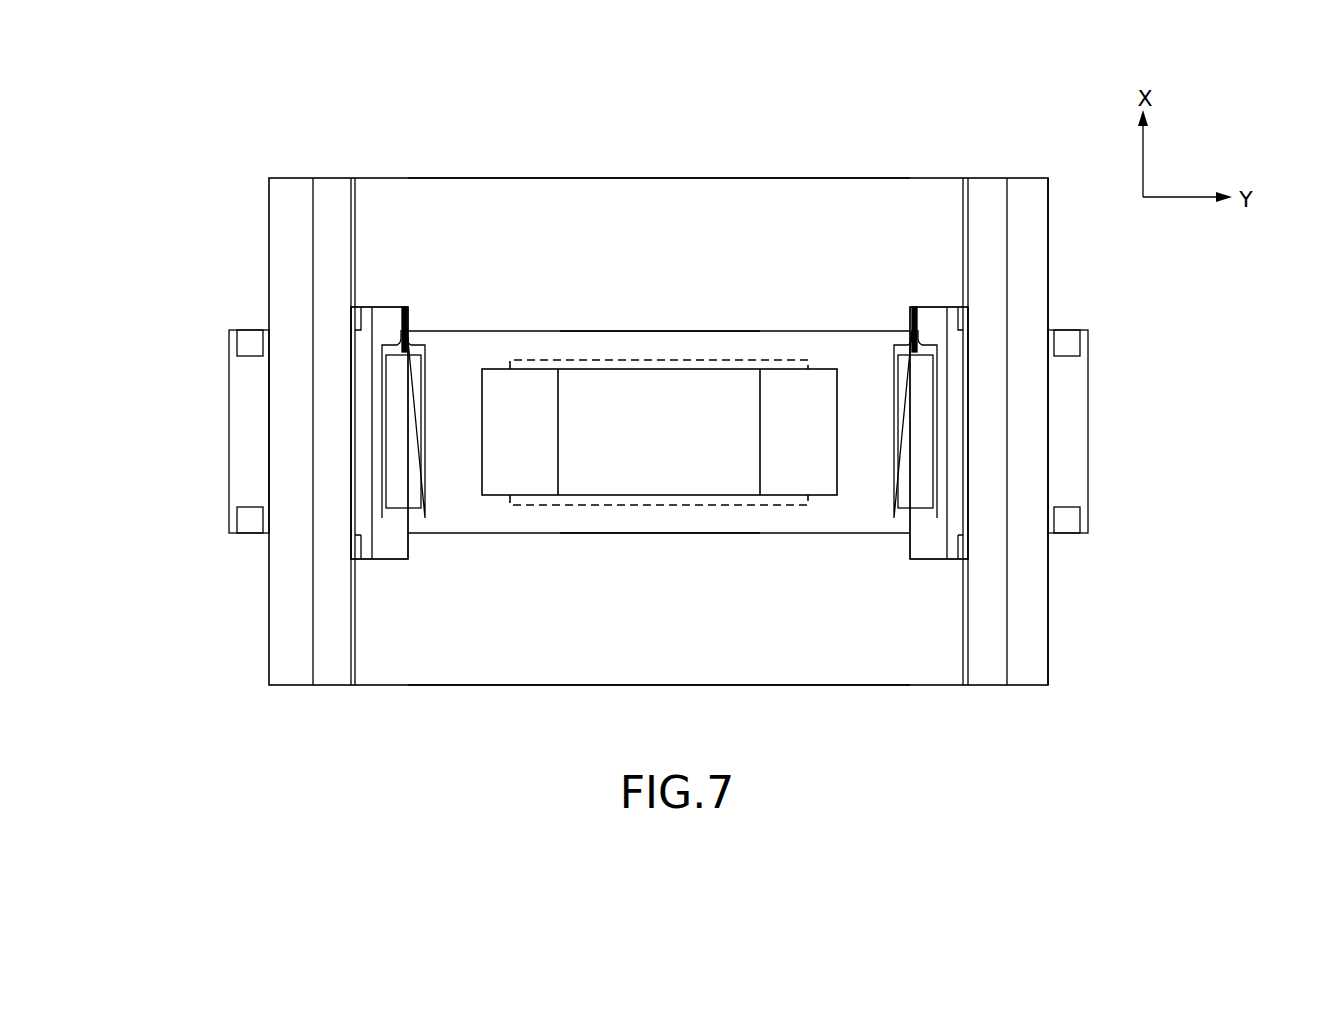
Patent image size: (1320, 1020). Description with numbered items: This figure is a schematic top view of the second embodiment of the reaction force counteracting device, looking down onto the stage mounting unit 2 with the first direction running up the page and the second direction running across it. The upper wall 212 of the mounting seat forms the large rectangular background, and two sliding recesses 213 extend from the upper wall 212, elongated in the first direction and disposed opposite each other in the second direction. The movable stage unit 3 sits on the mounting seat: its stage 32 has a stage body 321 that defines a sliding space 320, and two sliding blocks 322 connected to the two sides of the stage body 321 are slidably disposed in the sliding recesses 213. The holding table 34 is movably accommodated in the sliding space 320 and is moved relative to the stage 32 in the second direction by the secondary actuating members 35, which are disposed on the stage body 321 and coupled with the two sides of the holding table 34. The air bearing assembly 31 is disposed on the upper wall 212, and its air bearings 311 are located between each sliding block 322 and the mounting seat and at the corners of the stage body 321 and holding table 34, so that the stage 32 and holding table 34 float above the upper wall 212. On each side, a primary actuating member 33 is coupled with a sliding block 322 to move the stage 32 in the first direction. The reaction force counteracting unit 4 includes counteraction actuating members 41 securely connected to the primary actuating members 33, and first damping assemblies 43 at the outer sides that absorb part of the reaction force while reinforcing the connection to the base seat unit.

The stage mounting unit 2 is at (591, 180).
The upper wall 212 is at (771, 192).
The sliding recesses 213 is at (938, 650).
The movable stage unit 3 is at (697, 542).
The air bearing assembly 31 is at (659, 433).
The air bearings 311 is at (405, 300).
The stage 32 is at (702, 338).
The sliding space 320 is at (527, 400).
The stage body 321 is at (648, 342).
The sliding blocks 322 is at (408, 320).
The primary actuating members 33 is at (335, 190).
The holding table 34 is at (742, 378).
The secondary actuating members 35 is at (795, 357).
The reaction force counteracting unit 4 is at (1057, 298).
The counteraction actuating members 41 is at (285, 250).
The first damping assemblies 43 is at (231, 438).